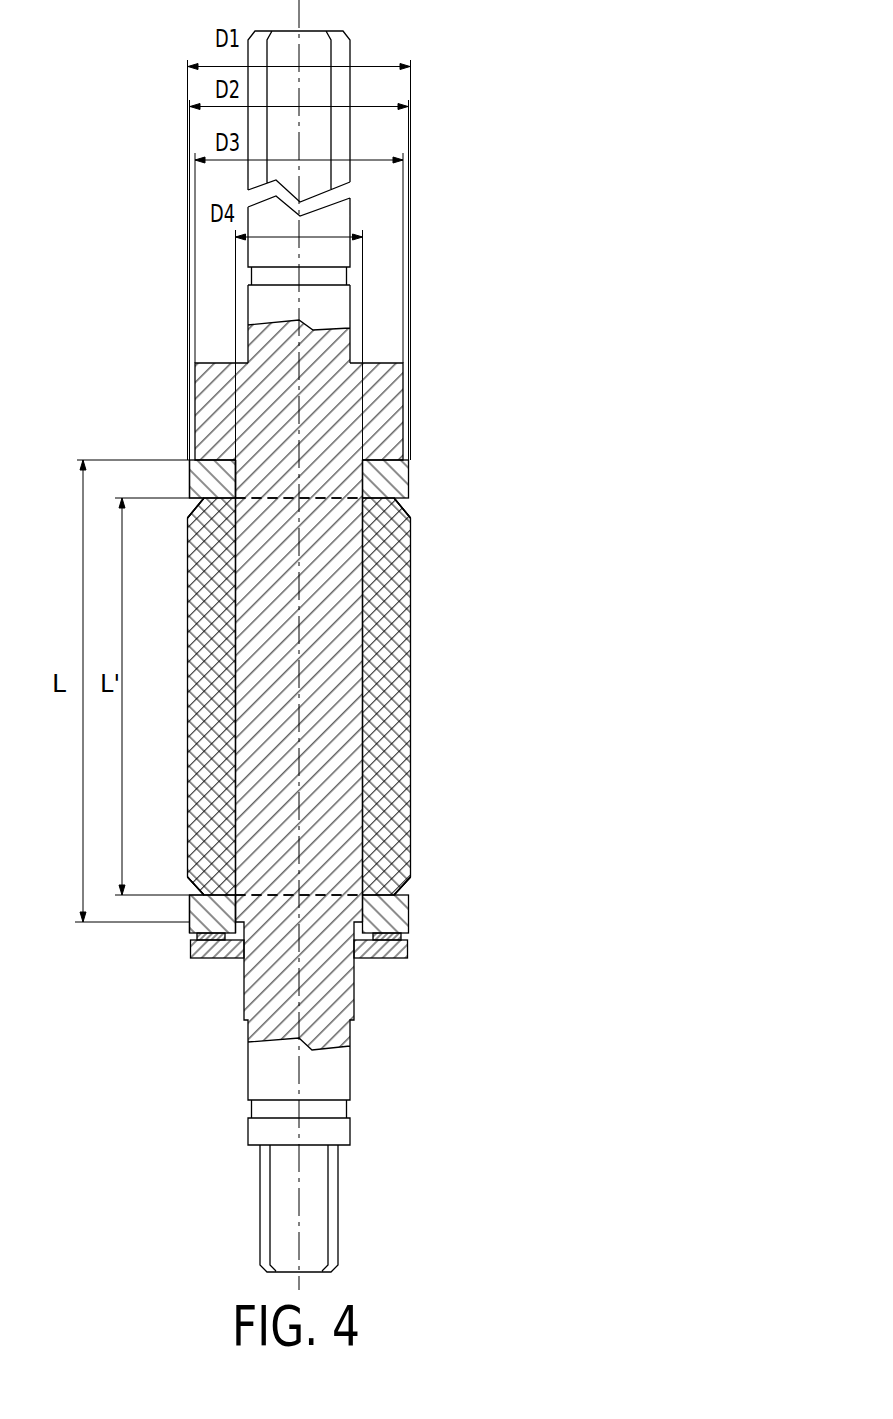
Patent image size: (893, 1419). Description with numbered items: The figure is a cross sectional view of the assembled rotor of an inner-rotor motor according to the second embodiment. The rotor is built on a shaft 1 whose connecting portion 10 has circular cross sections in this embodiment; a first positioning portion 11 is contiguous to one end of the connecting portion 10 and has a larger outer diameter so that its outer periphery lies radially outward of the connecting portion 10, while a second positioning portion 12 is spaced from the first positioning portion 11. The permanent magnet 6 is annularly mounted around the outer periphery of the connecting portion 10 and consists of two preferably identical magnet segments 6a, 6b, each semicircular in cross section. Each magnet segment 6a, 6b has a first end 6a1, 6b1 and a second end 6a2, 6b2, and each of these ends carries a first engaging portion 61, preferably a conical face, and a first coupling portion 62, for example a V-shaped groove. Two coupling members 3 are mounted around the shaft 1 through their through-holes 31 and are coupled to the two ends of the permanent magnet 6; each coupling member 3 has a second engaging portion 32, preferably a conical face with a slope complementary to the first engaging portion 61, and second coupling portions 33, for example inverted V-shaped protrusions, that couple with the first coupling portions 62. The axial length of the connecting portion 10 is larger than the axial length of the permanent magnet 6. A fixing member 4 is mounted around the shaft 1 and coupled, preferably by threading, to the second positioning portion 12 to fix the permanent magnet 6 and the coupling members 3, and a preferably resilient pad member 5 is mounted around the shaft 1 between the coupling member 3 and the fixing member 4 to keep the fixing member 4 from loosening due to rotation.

The shaft 1 is at (402, 347).
The first positioning portion 11 is at (392, 393).
The connecting portion 10 is at (363, 642).
The second positioning portion 12 is at (357, 1003).
The coupling member 3 is at (397, 478).
The through-hole 31 is at (228, 478).
The second engaging portion 32 is at (196, 696).
The second coupling portion 33 is at (299, 696).
The fixing member 4 is at (388, 955).
The pad member 5 is at (403, 935).
The permanent magnet 6 is at (318, 689).
The magnet segment 6a is at (398, 575).
The first end 6a1 is at (378, 490).
The second end 6a2 is at (380, 897).
The magnet segment 6b is at (205, 685).
The first end 6b1 is at (213, 497).
The second end 6b2 is at (215, 900).
The first engaging portion 61 is at (397, 500).
The first coupling portion 62 is at (300, 508).